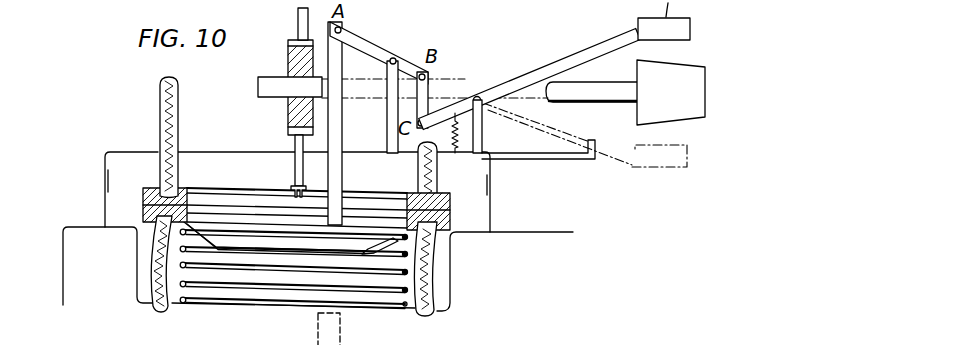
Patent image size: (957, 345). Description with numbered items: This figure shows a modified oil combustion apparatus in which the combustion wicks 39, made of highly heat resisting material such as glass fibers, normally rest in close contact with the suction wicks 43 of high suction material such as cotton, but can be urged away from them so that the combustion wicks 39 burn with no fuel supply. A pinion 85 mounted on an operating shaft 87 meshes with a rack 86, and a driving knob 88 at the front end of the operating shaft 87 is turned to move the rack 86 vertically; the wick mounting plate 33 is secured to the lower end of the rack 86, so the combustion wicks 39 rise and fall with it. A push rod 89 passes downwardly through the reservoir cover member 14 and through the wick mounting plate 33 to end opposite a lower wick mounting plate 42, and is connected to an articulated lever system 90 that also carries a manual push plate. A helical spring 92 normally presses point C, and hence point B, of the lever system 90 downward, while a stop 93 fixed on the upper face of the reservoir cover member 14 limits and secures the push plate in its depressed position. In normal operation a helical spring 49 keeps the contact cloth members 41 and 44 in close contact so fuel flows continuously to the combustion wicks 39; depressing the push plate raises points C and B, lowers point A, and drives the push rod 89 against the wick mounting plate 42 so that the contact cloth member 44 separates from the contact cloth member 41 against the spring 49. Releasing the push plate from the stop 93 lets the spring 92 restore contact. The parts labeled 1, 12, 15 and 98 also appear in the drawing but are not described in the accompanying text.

The base 1 is at (63, 284).
The housing 12 is at (440, 280).
The reservoir cover member 14 is at (138, 152).
The tubes 15 is at (243, 304).
The wick mounting plate 33 is at (219, 187).
The combustion wicks 39 is at (160, 97).
The contact cloth member 41 is at (440, 208).
The wick mounting plate 42 is at (387, 243).
The suction wicks 43 is at (419, 294).
The contact cloth member 44 is at (447, 218).
The helical spring 49 is at (184, 287).
The pinion 85 is at (288, 62).
The rack 86 is at (298, 23).
The operating shaft 87 is at (592, 85).
The driving knob 88 is at (688, 80).
The push rod 89 is at (340, 104).
The articulated lever system 90 is at (430, 73).
The helical spring 92 is at (457, 138).
The stop 93 is at (538, 160).
The member 98 is at (306, 329).